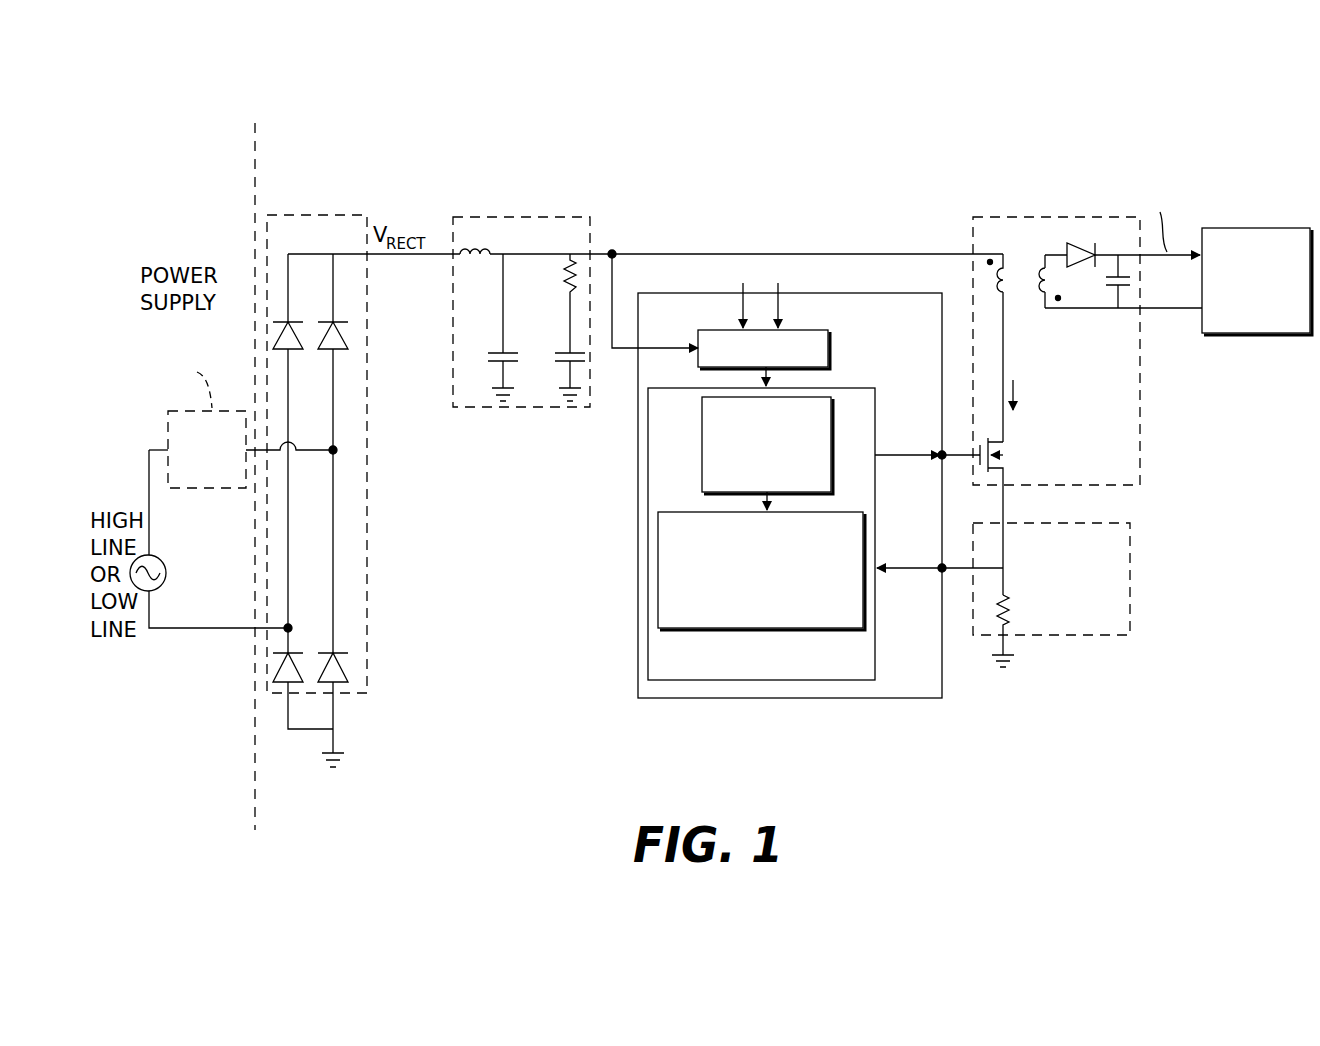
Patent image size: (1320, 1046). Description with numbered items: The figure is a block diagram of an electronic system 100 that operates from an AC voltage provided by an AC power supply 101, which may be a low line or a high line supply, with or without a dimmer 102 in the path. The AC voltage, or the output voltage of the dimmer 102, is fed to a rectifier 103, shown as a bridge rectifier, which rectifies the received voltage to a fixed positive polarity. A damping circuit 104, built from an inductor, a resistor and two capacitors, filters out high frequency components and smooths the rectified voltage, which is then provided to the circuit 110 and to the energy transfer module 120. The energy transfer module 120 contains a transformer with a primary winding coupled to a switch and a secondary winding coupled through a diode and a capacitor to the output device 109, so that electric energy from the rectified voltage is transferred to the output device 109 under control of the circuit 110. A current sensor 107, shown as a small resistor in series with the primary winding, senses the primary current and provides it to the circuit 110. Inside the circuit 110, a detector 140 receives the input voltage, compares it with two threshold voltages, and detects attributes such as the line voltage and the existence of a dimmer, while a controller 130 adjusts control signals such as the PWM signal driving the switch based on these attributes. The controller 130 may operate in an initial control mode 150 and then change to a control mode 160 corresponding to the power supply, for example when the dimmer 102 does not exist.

The electronic system 100 is at (1212, 148).
The AC power supply 101 is at (160, 590).
The dimmer 102 is at (222, 495).
The rectifier 103 is at (343, 212).
The damping circuit 104 is at (545, 214).
The current sensor 107 is at (1131, 571).
The output device 109 is at (1242, 228).
The circuit 110 is at (862, 293).
The energy transfer module 120 is at (1028, 212).
The controller 130 is at (648, 615).
The detector 140 is at (830, 357).
The initial control mode 150 is at (702, 418).
The control mode 160 is at (658, 553).